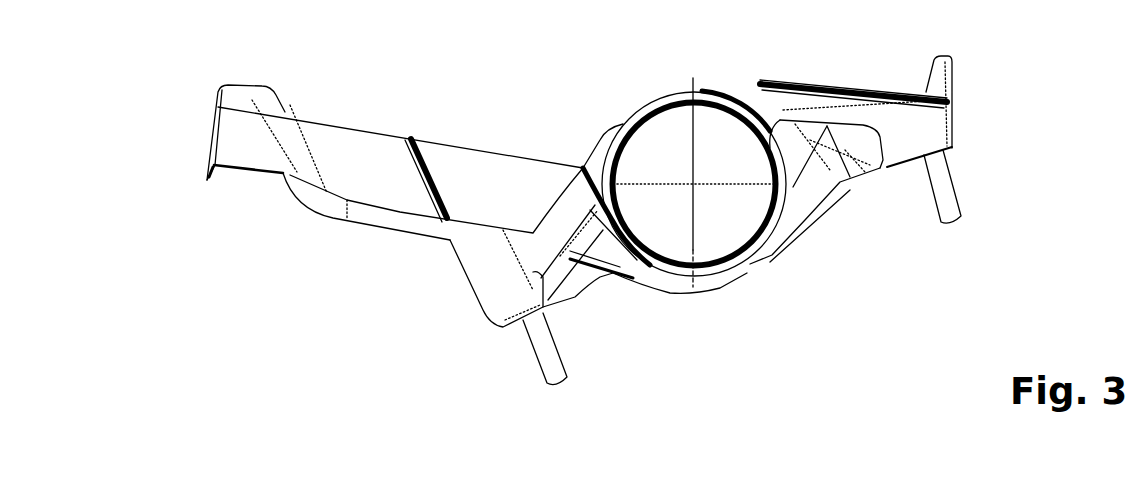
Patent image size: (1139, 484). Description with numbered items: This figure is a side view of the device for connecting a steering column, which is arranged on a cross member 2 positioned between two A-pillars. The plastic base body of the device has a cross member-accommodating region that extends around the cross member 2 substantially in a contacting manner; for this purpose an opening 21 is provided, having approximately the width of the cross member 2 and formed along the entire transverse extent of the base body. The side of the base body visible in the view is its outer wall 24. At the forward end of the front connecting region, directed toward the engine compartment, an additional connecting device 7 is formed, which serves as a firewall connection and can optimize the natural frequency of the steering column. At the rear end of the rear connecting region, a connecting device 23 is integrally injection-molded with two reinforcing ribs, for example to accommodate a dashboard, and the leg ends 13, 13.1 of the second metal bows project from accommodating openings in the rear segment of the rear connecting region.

The connecting device 7 is at (198, 123).
The outer wall 24 is at (373, 179).
The opening 21 is at (735, 62).
The cross member 2 is at (714, 249).
The connecting device 23 is at (970, 78).
The leg end 13 is at (970, 178).
The leg end 13.1 is at (512, 358).